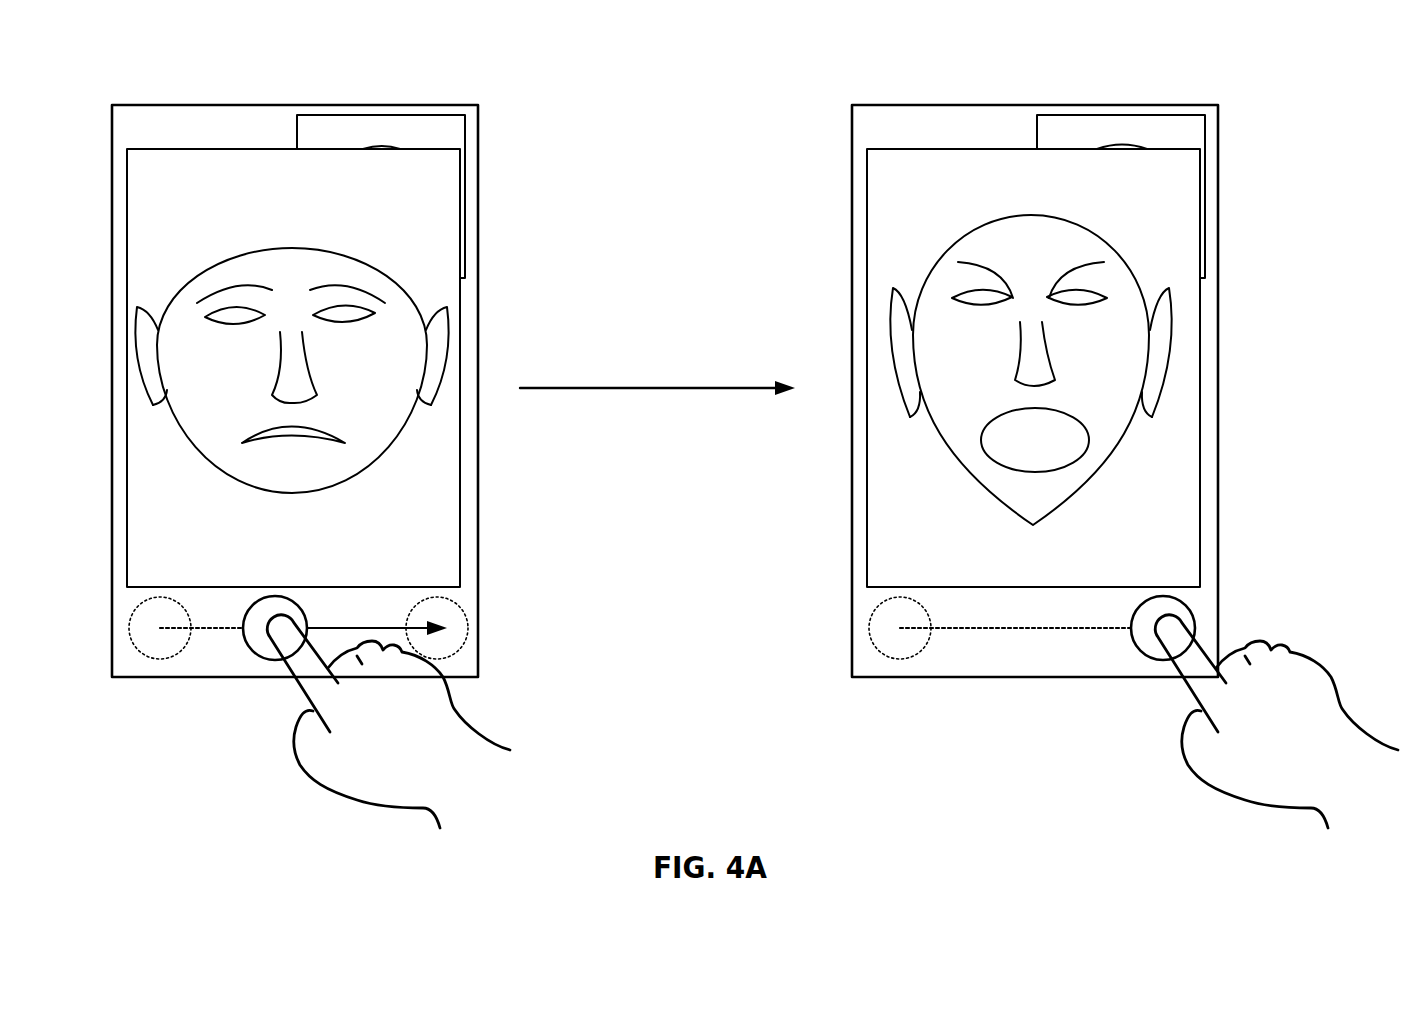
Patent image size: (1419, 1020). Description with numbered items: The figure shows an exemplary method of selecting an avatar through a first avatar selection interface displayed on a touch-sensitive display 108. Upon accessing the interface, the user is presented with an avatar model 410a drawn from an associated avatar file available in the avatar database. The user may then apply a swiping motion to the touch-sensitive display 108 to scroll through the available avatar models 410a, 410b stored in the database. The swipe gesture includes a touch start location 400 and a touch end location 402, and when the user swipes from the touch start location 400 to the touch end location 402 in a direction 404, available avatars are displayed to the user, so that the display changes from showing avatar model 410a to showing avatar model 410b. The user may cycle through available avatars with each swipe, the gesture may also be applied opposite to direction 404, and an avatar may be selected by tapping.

The touch-sensitive display 108 is at (172, 105).
The touch start location 400 is at (130, 626).
The touch end location 402 is at (468, 622).
The direction 404 is at (377, 618).
The avatar model 410a is at (208, 463).
The avatar model 410b is at (970, 490).